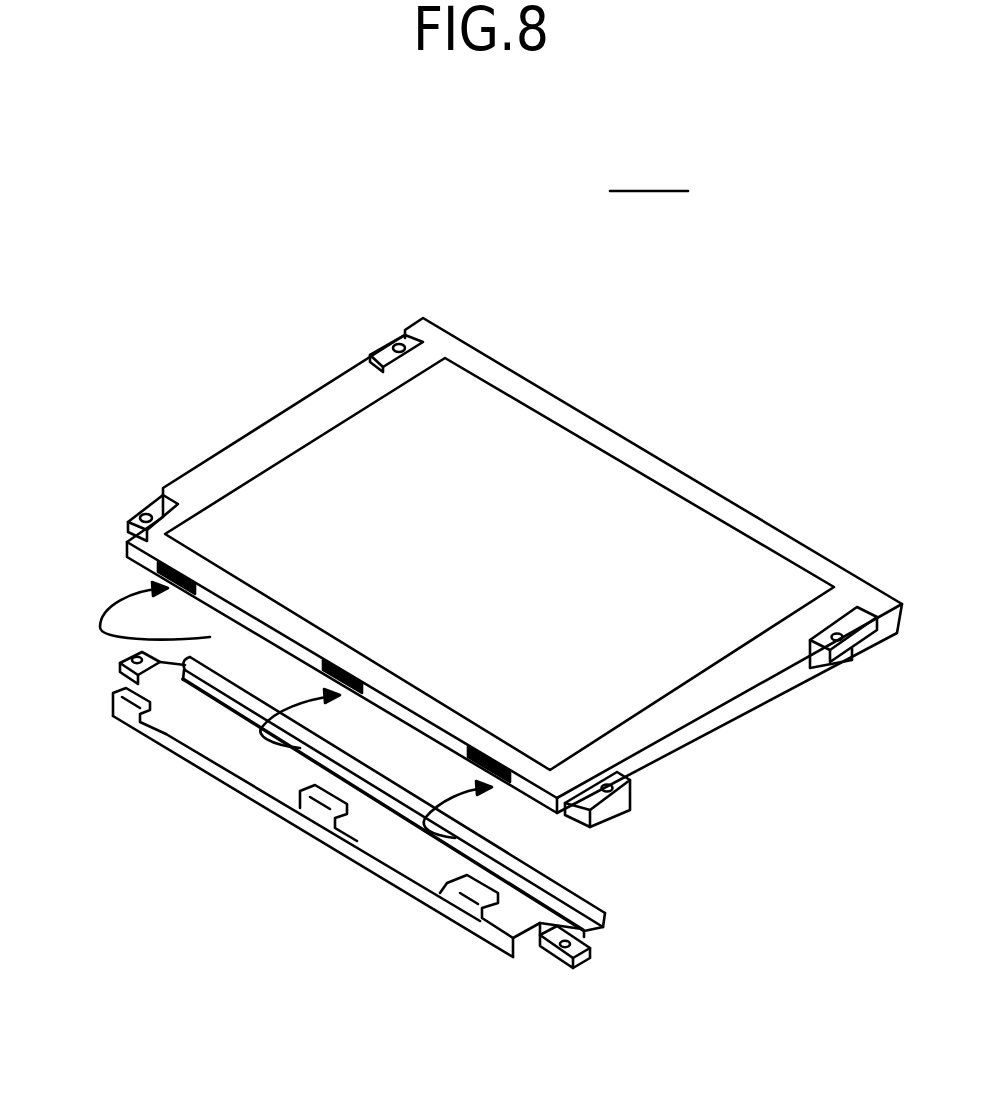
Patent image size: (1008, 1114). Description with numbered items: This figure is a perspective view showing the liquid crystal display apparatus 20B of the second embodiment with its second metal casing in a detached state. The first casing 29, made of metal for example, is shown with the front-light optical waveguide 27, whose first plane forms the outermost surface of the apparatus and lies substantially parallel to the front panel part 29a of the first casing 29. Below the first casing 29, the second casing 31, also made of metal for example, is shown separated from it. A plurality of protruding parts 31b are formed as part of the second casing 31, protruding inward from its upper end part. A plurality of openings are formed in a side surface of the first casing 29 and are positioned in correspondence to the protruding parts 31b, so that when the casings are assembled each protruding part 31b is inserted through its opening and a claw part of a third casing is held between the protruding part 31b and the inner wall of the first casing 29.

The display module 20B is at (648, 168).
The first casing 29 is at (290, 382).
The front-light optical waveguide 27 is at (609, 508).
The front panel part 29a is at (497, 752).
The second casing 31 is at (414, 955).
The protruding part 31b is at (433, 884).